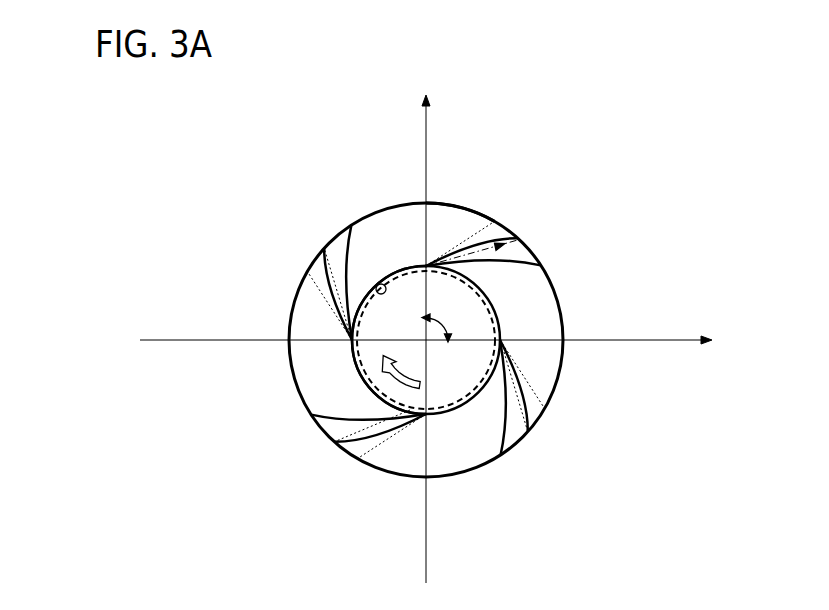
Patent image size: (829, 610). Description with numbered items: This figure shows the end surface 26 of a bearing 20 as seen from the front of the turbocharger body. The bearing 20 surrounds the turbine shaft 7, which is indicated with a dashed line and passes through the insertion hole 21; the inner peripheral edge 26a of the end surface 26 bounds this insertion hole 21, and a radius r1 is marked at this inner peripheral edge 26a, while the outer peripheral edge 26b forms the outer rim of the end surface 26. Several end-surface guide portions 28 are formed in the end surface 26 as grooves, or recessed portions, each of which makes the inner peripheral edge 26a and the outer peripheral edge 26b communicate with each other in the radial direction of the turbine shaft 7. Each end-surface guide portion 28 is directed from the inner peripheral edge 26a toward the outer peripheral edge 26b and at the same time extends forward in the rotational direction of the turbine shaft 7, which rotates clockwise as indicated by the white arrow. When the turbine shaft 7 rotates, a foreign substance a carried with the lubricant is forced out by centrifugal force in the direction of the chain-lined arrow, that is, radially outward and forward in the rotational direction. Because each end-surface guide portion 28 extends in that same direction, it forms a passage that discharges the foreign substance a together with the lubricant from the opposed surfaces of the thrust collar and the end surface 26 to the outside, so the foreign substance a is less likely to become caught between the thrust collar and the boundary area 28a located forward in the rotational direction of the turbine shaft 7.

The bearing 20 is at (553, 388).
The end surface 26 is at (474, 454).
The inner peripheral edge 26a is at (362, 242).
The insertion hole 21 is at (377, 283).
The outer peripheral edge 26b is at (481, 213).
The end-surface guide portion 28 is at (517, 224).
The boundary area 28a is at (541, 262).
The turbine shaft 7 is at (362, 380).
The foreign substance a is at (422, 265).
The fillet radius r1 is at (397, 296).